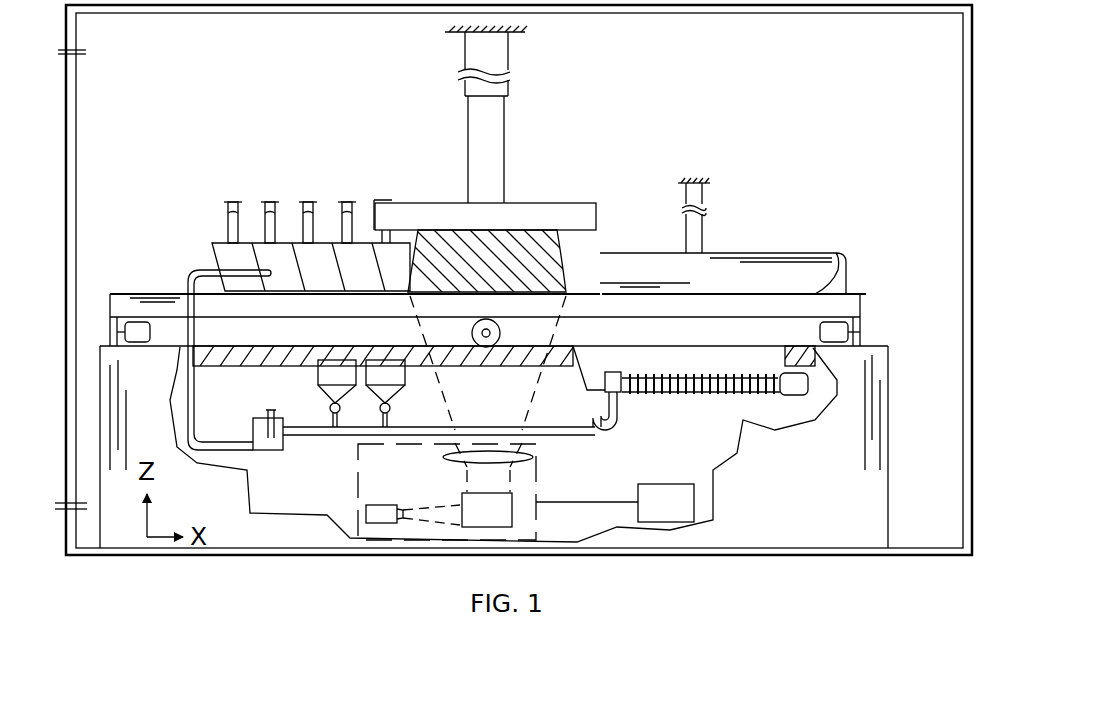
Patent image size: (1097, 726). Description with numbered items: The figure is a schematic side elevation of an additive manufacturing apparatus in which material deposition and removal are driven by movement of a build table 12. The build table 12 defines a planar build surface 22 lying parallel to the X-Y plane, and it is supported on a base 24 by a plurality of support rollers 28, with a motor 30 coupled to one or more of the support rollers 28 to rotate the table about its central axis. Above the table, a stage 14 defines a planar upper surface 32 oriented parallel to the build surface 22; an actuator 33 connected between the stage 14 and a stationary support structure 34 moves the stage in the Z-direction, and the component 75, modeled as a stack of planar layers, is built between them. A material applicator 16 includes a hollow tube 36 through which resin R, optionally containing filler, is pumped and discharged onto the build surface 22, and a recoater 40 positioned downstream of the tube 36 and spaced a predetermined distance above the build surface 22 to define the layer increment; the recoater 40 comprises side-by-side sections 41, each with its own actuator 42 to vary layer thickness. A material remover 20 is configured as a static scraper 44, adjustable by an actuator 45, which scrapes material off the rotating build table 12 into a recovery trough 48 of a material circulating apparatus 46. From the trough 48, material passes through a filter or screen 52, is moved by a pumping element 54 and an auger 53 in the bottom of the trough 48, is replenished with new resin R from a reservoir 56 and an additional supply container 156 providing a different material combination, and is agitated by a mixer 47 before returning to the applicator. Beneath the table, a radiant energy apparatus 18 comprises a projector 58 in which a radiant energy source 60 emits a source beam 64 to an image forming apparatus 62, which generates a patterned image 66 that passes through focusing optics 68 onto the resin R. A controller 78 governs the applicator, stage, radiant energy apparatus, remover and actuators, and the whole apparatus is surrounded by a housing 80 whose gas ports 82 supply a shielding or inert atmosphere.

The build table 12 is at (112, 310).
The stage 14 is at (538, 203).
The material applicator 16 is at (230, 182).
The radiant energy apparatus 18 is at (340, 505).
The material remover 20 is at (752, 212).
The build surface 22 is at (128, 290).
The base 24 is at (888, 522).
The support rollers 28 is at (500, 333).
The motor 30 is at (820, 332).
The upper surface 32 is at (592, 236).
The actuator 33 is at (504, 135).
The stationary support structure 34 is at (512, 34).
The hollow tube 36 is at (195, 273).
The recoater 40 is at (206, 238).
The sections 41 is at (343, 262).
The actuator 42 is at (268, 214).
The scraper 44 is at (797, 252).
The actuator 45 is at (692, 183).
The material circulating apparatus 46 is at (665, 432).
The mixer 47 is at (270, 416).
The recovery trough 48 is at (645, 393).
The filter or screen 52 is at (613, 370).
The auger 53 is at (802, 393).
The pumping element 54 is at (595, 433).
The reservoir 56 is at (350, 385).
The additional supply container 156 is at (398, 378).
The projector 58 is at (536, 475).
The radiant energy source 60 is at (375, 505).
The image forming apparatus 62 is at (501, 522).
The source beam 64 is at (430, 508).
The patterned image 66 is at (535, 383).
The focusing optics 68 is at (445, 455).
The component 75 is at (500, 274).
The controller 78 is at (681, 516).
The housing 80 is at (203, 13).
The gas ports 82 is at (85, 54).
The resin R is at (600, 292).